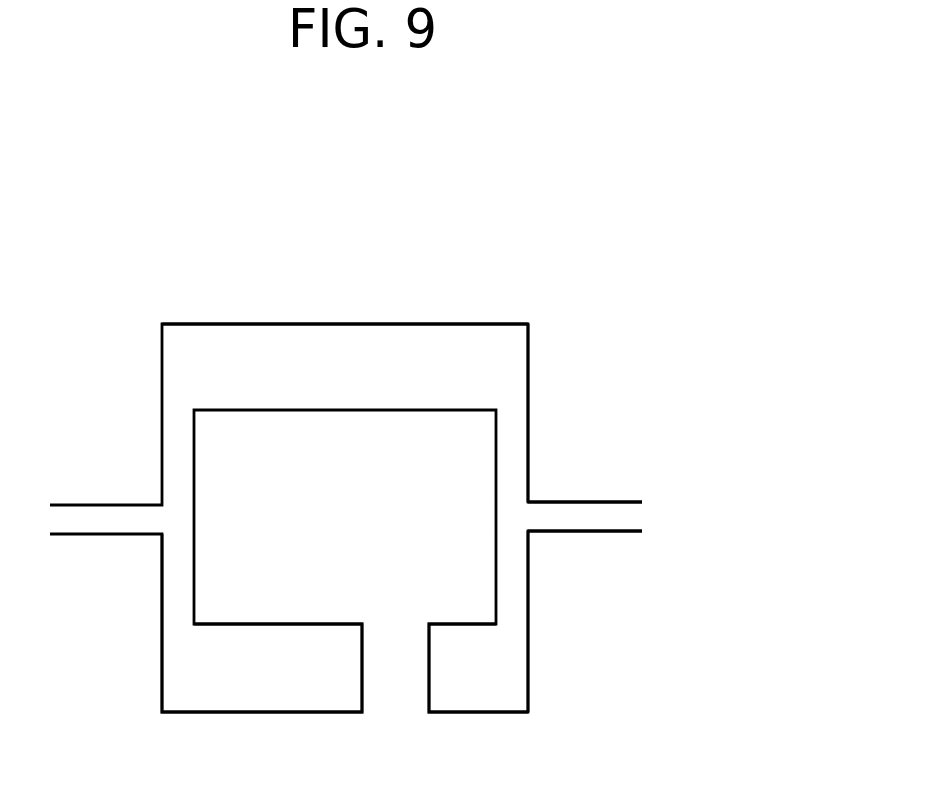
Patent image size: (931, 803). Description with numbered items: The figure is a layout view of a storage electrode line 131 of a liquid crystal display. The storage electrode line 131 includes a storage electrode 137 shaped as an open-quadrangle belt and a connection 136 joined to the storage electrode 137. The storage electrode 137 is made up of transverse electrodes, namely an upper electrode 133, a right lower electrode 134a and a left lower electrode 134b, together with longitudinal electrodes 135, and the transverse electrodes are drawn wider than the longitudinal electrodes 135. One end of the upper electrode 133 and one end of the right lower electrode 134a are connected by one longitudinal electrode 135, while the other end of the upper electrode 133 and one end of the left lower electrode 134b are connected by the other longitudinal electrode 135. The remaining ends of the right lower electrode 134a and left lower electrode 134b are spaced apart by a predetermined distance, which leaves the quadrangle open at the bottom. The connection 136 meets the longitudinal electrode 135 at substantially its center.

The storage electrode line 131 is at (367, 220).
The upper electrode 133 is at (405, 322).
The right lower electrode 134a is at (475, 712).
The left lower electrode 134b is at (265, 712).
The longitudinal electrode 135 is at (528, 395).
The connection 136 is at (623, 497).
The storage electrode 137 is at (722, 347).